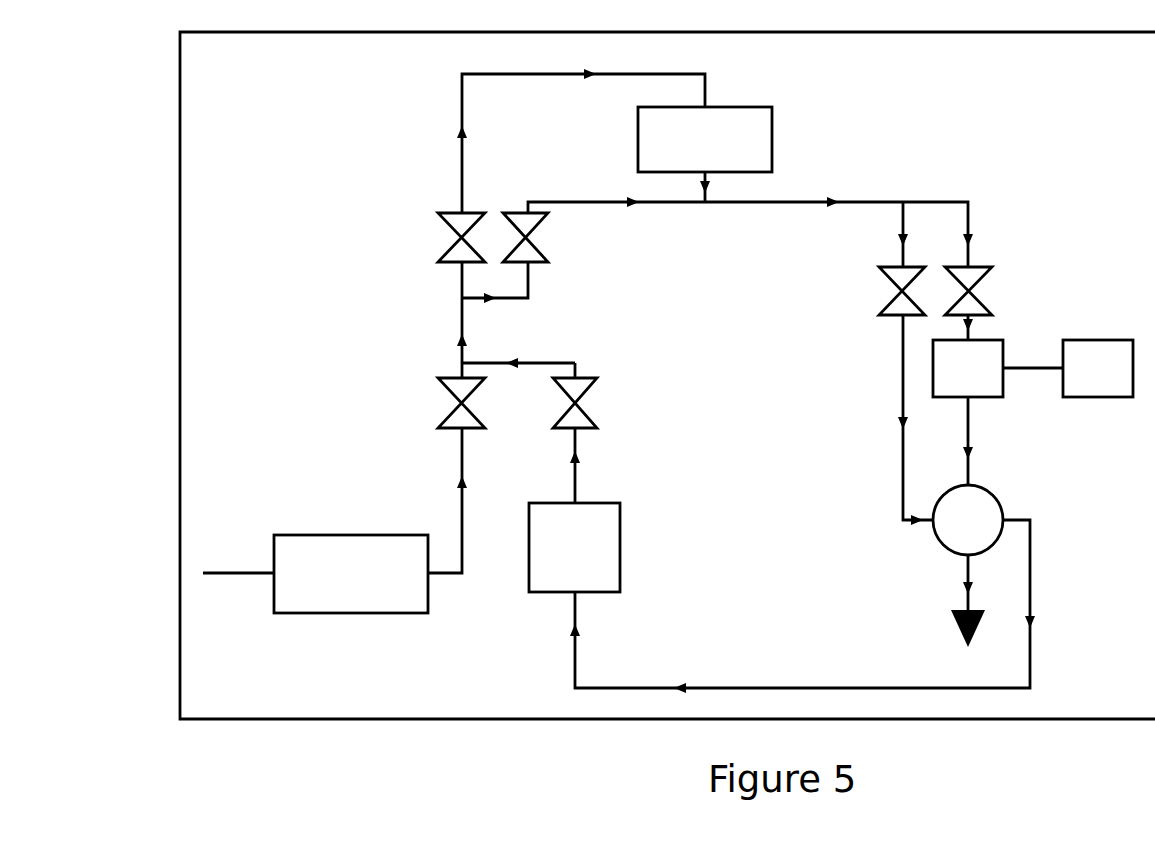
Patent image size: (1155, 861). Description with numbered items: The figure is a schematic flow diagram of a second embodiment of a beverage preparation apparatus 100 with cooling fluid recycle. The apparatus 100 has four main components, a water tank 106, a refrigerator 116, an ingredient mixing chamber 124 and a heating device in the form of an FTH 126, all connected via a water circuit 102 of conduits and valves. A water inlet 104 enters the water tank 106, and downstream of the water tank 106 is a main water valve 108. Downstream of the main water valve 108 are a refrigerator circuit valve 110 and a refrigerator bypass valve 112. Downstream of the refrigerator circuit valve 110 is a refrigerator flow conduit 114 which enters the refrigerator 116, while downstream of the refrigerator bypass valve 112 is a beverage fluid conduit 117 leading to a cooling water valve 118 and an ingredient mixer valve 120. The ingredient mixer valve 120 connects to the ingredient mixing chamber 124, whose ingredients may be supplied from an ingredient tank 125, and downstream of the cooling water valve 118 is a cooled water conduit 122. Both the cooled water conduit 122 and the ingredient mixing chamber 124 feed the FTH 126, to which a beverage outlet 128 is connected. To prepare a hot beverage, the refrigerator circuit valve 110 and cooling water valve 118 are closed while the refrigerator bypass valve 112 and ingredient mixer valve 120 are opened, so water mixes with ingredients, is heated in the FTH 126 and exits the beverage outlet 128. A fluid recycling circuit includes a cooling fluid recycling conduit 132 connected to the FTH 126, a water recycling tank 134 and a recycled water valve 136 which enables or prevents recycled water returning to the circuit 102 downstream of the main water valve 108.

The beverage preparation apparatus 100 is at (310, 742).
The water circuit 102 is at (428, 334).
The water inlet 104 is at (237, 573).
The water tank 106 is at (323, 588).
The main water valve 108 is at (445, 388).
The refrigerator circuit valve 110 is at (448, 222).
The refrigerator bypass valve 112 is at (545, 262).
The refrigerator flow conduit 114 is at (462, 92).
The refrigerator 116 is at (677, 155).
The beverage fluid conduit 117 is at (812, 202).
The cooling water valve 118 is at (888, 275).
The ingredient mixer valve 120 is at (985, 278).
The cooled water conduit 122 is at (903, 462).
The ingredient mixing chamber 124 is at (940, 387).
The ingredient tank 125 is at (1070, 387).
The FTH 126 is at (941, 534).
The beverage outlet 128 is at (968, 565).
The cooling fluid recycling conduit 132 is at (770, 688).
The water recycling tank 134 is at (547, 562).
The recycled water valve 136 is at (590, 393).